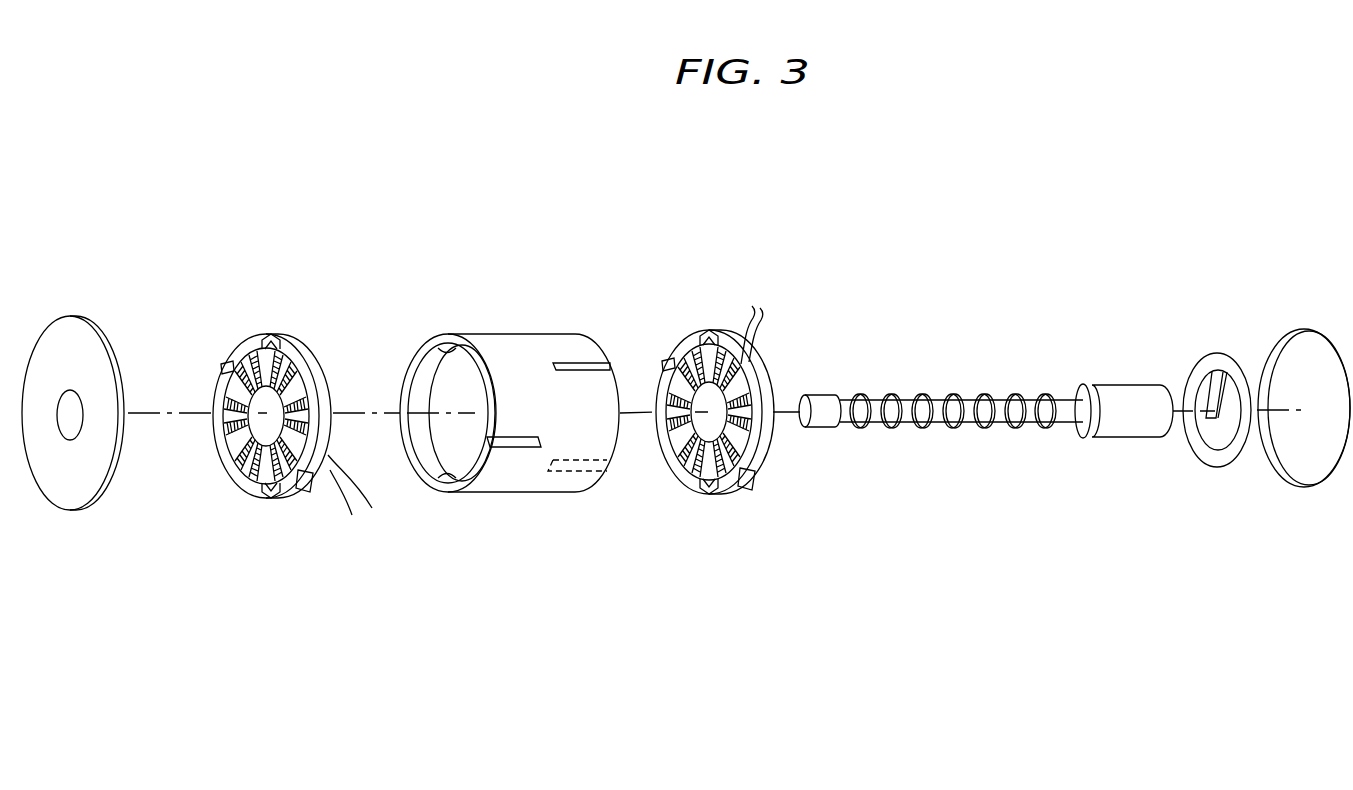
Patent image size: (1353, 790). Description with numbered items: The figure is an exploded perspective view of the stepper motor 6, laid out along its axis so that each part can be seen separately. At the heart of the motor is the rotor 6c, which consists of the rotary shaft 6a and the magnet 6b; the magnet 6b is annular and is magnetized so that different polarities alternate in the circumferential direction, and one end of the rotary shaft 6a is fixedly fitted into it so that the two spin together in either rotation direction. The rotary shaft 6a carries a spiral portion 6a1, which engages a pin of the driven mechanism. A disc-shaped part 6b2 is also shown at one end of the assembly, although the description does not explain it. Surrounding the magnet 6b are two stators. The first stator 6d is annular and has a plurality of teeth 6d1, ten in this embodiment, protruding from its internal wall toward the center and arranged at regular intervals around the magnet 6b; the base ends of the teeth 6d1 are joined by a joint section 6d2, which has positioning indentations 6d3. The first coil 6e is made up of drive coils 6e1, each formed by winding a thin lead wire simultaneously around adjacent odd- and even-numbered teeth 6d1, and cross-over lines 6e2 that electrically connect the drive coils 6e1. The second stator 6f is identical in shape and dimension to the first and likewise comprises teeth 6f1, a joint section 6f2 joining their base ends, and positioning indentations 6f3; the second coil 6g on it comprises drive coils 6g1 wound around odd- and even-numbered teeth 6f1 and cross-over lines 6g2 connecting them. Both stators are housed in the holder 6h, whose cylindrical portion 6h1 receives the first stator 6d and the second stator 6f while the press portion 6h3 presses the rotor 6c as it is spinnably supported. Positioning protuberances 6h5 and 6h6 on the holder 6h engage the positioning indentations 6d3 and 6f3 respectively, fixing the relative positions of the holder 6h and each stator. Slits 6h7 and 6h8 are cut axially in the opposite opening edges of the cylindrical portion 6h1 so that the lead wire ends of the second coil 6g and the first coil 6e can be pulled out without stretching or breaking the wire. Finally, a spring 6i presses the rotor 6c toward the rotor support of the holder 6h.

The stepper motor 6 is at (636, 720).
The rotary shaft 6a is at (1075, 393).
The spiral portion 6a1 is at (925, 425).
The magnet 6b is at (1122, 392).
The end plate 6b2 is at (68, 500).
The rotor 6c is at (1022, 468).
The first stator 6d is at (250, 336).
The teeth 6d1 is at (277, 337).
The joint section 6d2 is at (300, 500).
The positioning indentations 6d3 is at (272, 498).
The first coil 6e is at (350, 503).
The drive coils 6e1 is at (222, 368).
The cross-over lines 6e2 is at (230, 467).
The second stator 6f is at (723, 500).
The teeth 6f1 is at (668, 364).
The joint section 6f2 is at (748, 490).
The positioning indentations 6f3 is at (708, 498).
The second coil 6g is at (736, 335).
The drive coils 6g1 is at (760, 388).
The cross-over lines 6g2 is at (752, 430).
The holder 6h is at (528, 618).
The cylindrical portion 6h1 is at (505, 335).
The press portion 6h3 is at (1308, 485).
The positioning protuberance 6h5 is at (439, 338).
The positioning protuberance 6h6 is at (573, 483).
The slit 6h7 is at (568, 362).
The slit 6h8 is at (508, 448).
The spring 6i is at (1214, 468).